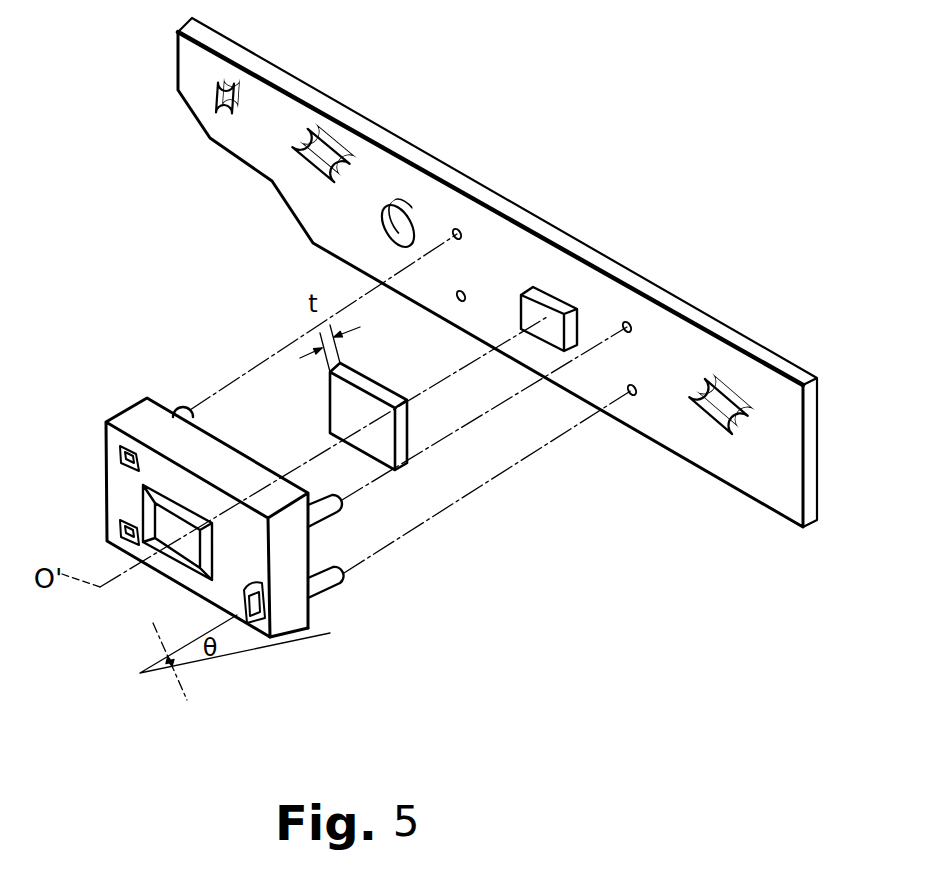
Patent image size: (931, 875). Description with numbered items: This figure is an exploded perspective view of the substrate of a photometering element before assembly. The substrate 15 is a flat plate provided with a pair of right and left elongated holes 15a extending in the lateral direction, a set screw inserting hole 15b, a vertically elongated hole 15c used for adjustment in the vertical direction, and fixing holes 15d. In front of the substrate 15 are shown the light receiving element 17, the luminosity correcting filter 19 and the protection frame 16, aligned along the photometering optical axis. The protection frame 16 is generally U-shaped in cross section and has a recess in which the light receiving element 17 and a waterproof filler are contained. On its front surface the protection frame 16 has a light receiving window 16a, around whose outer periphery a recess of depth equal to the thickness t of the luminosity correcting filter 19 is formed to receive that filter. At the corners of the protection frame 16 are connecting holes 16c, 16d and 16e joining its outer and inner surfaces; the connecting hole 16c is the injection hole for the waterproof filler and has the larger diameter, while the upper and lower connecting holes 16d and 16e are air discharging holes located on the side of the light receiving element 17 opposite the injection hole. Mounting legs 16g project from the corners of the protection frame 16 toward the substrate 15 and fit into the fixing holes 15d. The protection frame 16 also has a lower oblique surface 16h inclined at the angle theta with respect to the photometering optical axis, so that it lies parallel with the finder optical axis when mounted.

The substrate 15 is at (697, 342).
The elongated holes 15a is at (327, 148).
The set screw inserting hole 15b is at (407, 218).
The vertically elongated hole 15c is at (229, 82).
The fixing holes 15d is at (467, 293).
The protection frame 16 is at (125, 493).
The light receiving window 16a is at (197, 555).
The connecting hole (injection hole) 16c is at (250, 618).
The connecting hole (air discharging hole) 16d is at (128, 450).
The connecting hole (air discharging hole) 16e is at (120, 533).
The mounting legs 16g is at (182, 407).
The lower oblique surface 16h is at (290, 633).
The light receiving element 17 is at (547, 313).
The luminosity correcting filter 19 is at (398, 467).